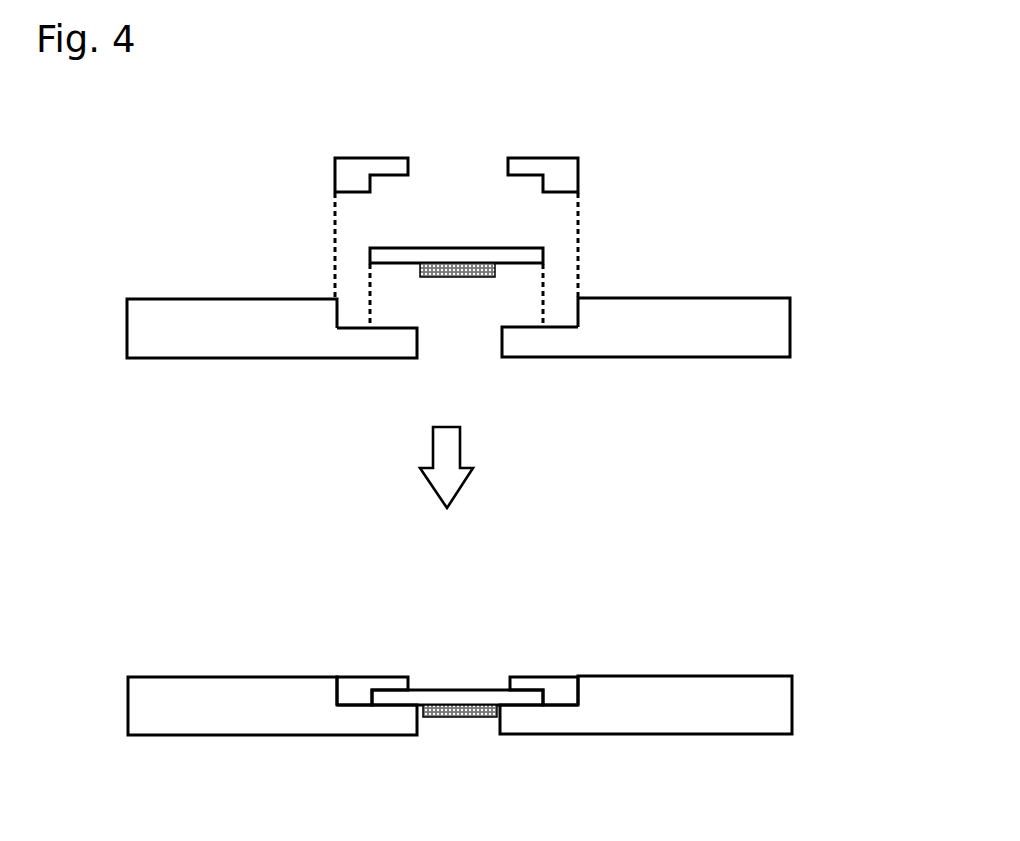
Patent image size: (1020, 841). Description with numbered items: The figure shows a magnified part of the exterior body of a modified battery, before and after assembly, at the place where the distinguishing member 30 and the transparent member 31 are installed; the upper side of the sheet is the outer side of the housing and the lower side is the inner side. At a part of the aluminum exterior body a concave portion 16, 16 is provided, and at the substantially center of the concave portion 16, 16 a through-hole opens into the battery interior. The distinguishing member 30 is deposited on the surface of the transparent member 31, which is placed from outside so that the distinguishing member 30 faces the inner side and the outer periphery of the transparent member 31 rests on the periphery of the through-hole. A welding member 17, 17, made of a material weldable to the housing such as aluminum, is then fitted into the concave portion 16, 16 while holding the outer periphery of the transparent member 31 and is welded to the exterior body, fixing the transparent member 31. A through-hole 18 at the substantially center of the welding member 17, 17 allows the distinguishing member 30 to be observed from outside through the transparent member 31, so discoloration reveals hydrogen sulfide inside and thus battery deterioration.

The concave portion 16 is at (372, 338).
The welding member 17 is at (350, 166).
The through-hole 18 is at (470, 131).
The distinguishing member 30 is at (490, 264).
The transparent member 31 is at (462, 256).